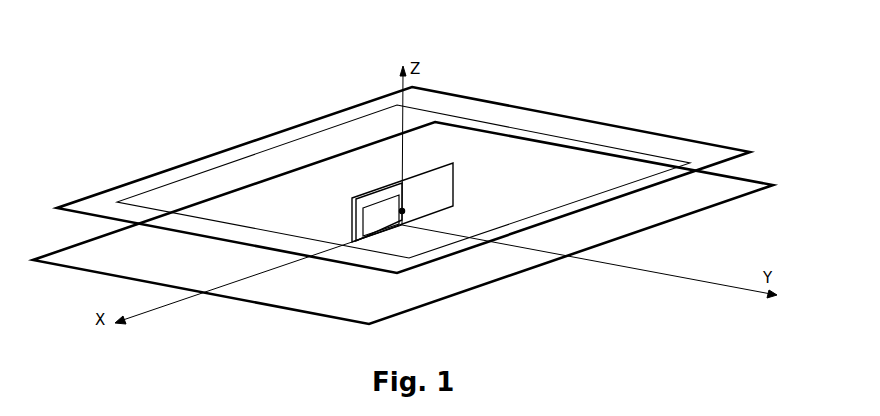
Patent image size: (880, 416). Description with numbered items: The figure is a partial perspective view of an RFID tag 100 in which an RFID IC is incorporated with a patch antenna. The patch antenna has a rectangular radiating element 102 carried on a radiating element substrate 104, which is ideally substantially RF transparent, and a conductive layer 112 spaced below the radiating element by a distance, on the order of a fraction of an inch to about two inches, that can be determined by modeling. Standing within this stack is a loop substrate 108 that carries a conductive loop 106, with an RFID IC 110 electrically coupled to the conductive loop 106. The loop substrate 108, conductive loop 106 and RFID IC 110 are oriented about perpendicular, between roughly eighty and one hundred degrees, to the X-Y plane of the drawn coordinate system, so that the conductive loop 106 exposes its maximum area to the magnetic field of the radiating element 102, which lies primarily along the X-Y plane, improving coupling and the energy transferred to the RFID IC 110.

The RFID tag 100 is at (68, 77).
The radiating element 102 is at (372, 125).
The radiating element substrate 104 is at (560, 123).
The conductive loop 106 is at (362, 220).
The loop substrate 108 is at (440, 184).
The RFID IC 110 is at (405, 211).
The conductive layer 112 is at (492, 265).